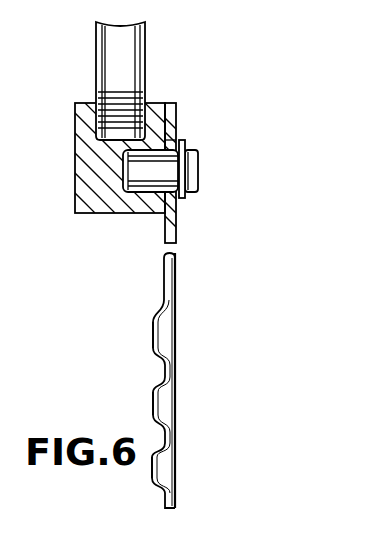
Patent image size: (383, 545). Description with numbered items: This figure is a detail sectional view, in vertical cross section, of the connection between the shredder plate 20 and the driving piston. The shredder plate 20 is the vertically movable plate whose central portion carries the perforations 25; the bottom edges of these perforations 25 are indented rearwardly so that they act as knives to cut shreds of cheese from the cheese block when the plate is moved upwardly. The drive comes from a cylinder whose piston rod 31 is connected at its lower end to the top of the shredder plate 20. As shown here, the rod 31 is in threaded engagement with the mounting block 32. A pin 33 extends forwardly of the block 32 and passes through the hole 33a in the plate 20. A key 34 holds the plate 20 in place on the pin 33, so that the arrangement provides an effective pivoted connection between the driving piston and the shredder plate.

The shredder plate 20 is at (180, 266).
The perforations 25 is at (158, 447).
The piston rod 31 is at (145, 55).
The mounting block 32 is at (98, 213).
The pin 33 is at (193, 179).
The hole 33a is at (173, 140).
The key 34 is at (185, 143).